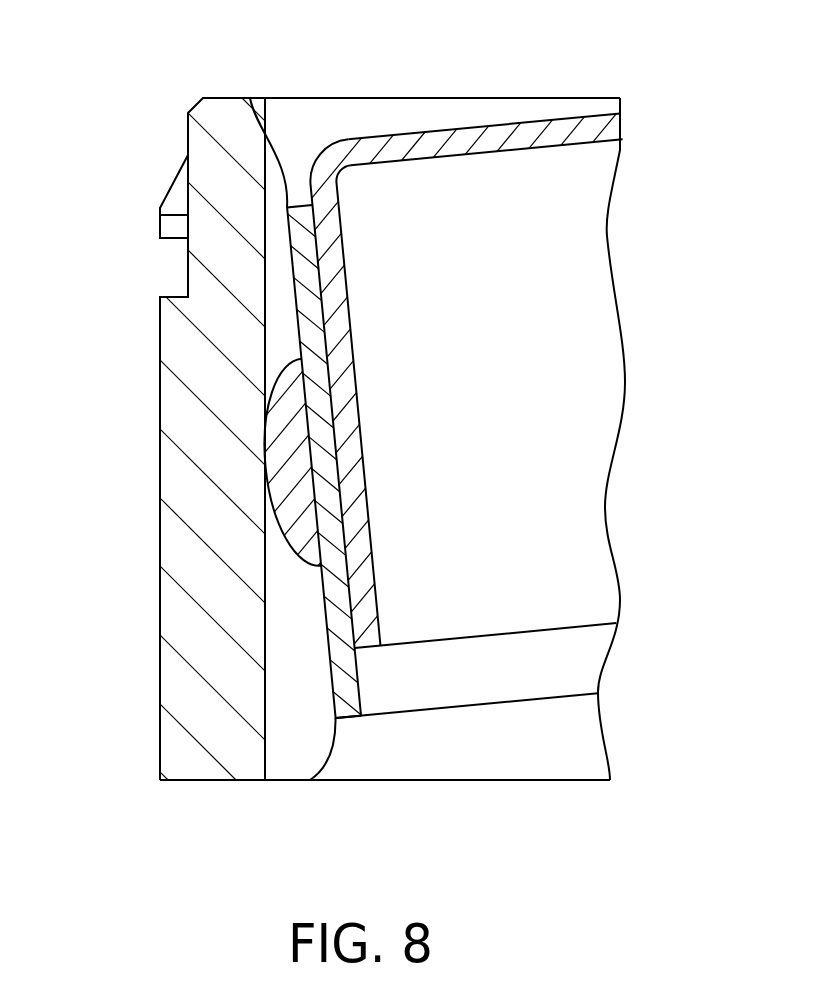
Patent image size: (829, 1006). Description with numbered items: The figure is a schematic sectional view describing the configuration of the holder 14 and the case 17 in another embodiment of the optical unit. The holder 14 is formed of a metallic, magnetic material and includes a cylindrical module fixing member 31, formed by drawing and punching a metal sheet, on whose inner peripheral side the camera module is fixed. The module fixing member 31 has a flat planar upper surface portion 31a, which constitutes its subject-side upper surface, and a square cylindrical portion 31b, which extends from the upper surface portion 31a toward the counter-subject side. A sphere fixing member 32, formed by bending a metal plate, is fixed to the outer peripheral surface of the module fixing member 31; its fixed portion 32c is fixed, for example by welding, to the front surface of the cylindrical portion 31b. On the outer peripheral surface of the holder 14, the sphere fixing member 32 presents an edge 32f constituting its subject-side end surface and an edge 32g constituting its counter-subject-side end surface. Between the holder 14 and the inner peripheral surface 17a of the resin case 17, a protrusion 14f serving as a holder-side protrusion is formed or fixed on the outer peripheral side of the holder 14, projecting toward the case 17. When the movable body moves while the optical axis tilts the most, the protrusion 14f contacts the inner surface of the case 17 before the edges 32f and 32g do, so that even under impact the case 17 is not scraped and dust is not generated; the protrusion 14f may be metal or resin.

The holder 14 is at (453, 130).
The protrusion 14f is at (265, 458).
The case 17 is at (442, 63).
The gap portion 17a is at (357, 98).
The module fixing member 31 is at (565, 118).
The upper surface portion 31a is at (485, 139).
The cylindrical portion 31b is at (349, 320).
The sphere fixing member 32 is at (291, 243).
The fixed portion 32c is at (324, 461).
The edge 32f is at (255, 98).
The edge 32g is at (310, 780).